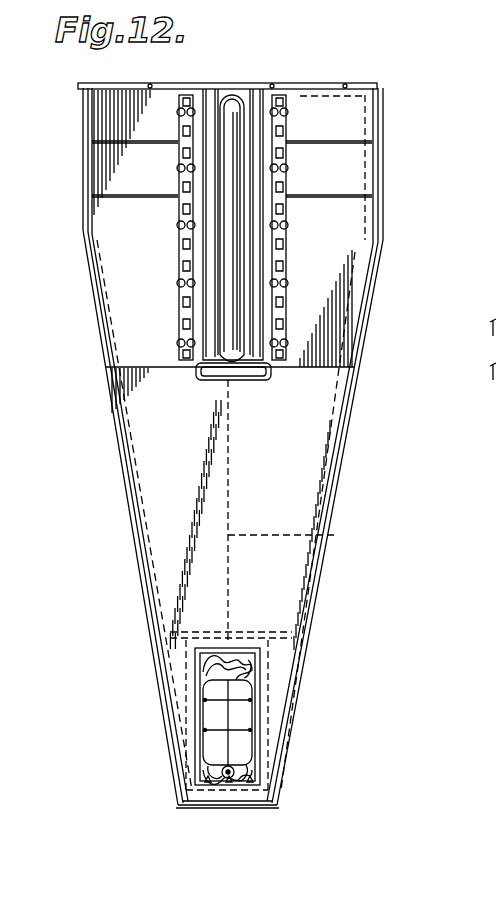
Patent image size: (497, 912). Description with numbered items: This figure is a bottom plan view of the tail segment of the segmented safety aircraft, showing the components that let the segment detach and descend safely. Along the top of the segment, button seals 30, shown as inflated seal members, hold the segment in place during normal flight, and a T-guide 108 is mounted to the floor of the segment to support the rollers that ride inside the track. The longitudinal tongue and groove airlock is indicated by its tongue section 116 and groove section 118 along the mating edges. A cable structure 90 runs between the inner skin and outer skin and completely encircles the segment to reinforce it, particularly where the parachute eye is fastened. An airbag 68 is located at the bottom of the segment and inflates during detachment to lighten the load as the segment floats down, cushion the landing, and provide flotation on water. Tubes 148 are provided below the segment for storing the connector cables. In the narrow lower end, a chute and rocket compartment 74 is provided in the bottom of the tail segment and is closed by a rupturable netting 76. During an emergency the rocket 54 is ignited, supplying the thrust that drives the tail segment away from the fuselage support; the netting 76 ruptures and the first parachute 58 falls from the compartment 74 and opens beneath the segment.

The button seals 30 is at (381, 88).
The T-guide 108 is at (150, 84).
The tongue section 116 is at (236, 95).
The airbag 68 is at (243, 97).
The cable structure 90 is at (345, 143).
The groove section 118 is at (380, 258).
The tubes 148 is at (244, 352).
The rupturable netting 76 is at (222, 678).
The chute and rocket compartment 74 is at (256, 683).
The first parachute 58 is at (222, 715).
The rocket 54 is at (229, 779).